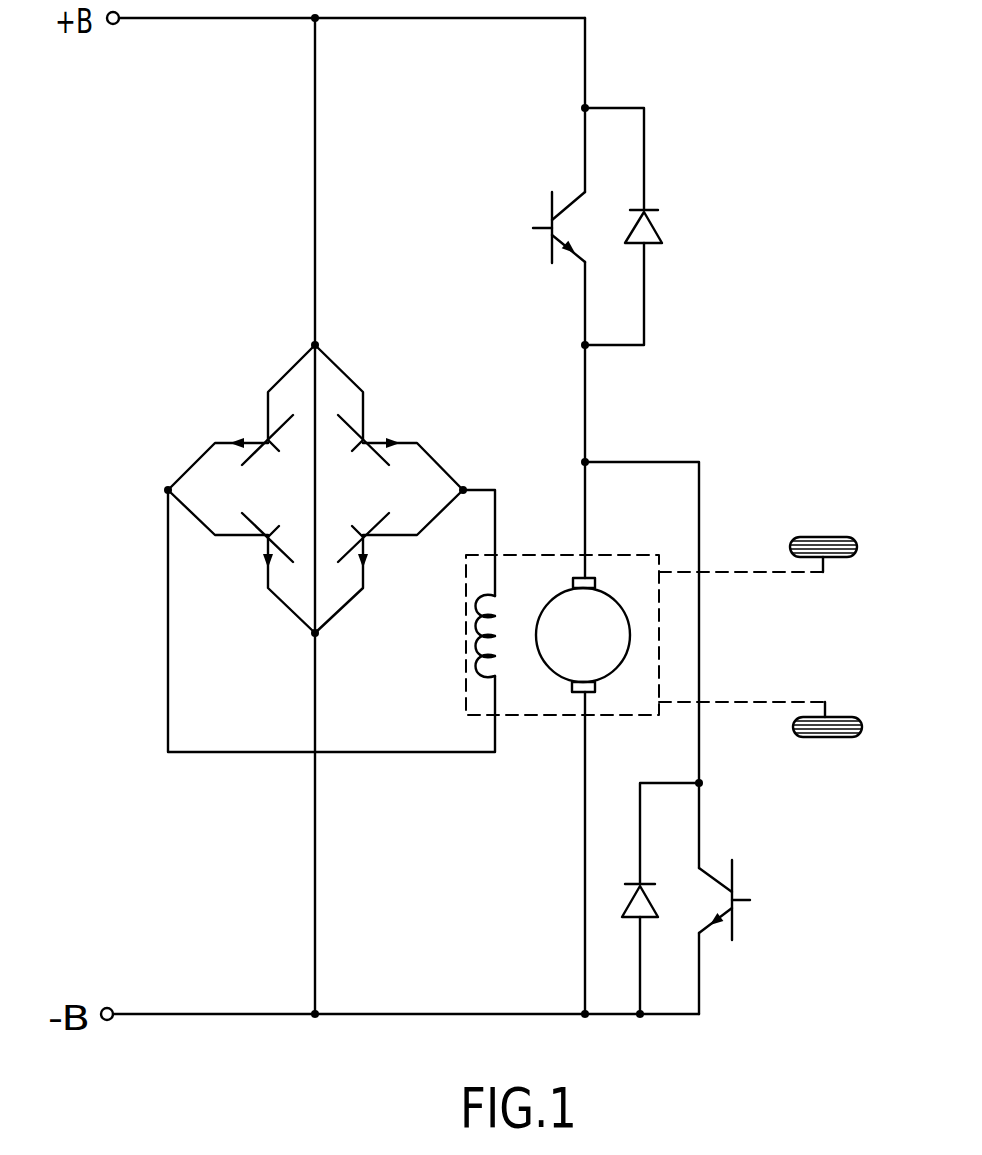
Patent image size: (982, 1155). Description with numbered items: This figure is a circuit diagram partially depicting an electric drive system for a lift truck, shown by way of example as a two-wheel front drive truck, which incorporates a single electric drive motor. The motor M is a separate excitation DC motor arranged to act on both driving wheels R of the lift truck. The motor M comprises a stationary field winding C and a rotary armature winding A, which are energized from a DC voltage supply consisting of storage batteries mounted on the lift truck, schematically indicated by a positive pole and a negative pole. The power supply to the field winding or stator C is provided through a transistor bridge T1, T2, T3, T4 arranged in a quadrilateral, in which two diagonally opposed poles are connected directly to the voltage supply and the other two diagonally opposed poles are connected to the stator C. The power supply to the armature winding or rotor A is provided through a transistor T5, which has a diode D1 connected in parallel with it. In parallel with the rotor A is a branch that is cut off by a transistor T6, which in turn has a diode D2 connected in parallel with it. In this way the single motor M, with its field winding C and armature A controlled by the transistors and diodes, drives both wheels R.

The transistor T1 is at (385, 421).
The transistor T2 is at (256, 554).
The transistor T3 is at (248, 418).
The transistor T4 is at (380, 552).
The transistor T5 is at (538, 168).
The transistor T6 is at (731, 946).
The diode D1 is at (672, 188).
The diode D2 is at (620, 888).
The field winding C is at (507, 585).
The electric drive motor M is at (617, 555).
The armature winding A is at (563, 660).
The driving wheels R is at (818, 538).